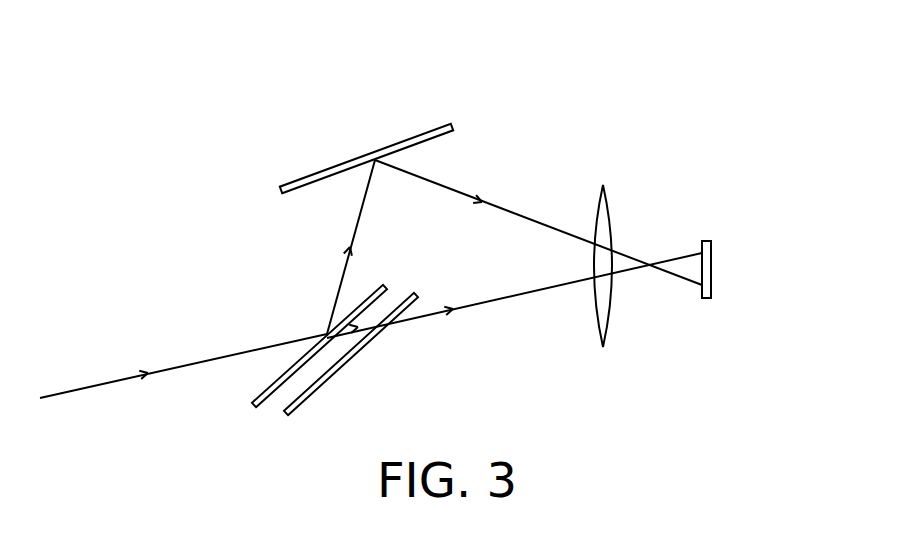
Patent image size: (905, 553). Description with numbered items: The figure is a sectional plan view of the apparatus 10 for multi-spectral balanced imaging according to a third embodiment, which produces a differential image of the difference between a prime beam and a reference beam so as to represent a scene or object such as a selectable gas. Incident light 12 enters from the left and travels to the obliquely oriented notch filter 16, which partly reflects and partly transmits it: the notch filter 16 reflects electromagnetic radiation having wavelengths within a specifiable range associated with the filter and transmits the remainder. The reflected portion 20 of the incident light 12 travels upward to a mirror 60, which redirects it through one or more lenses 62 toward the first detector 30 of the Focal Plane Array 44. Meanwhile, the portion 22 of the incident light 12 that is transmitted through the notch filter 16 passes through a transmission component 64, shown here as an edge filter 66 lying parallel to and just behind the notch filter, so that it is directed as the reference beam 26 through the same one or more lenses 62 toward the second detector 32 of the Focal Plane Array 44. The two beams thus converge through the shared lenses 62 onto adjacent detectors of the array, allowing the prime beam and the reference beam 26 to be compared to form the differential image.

The apparatus 10 is at (655, 78).
The incident light 12 is at (103, 382).
The notch filter 16 is at (309, 366).
The prime beam 20 is at (338, 270).
The transmitted portion of incident light 22 is at (368, 323).
The reference beam 26 is at (502, 303).
The first detector 30 is at (712, 288).
The second detector 32 is at (712, 247).
The Focal Plane Array 44 is at (760, 260).
The mirror 60 is at (300, 170).
The lenses 62 is at (613, 205).
The transmission component 64 is at (363, 348).
The edge filter 66 is at (335, 376).